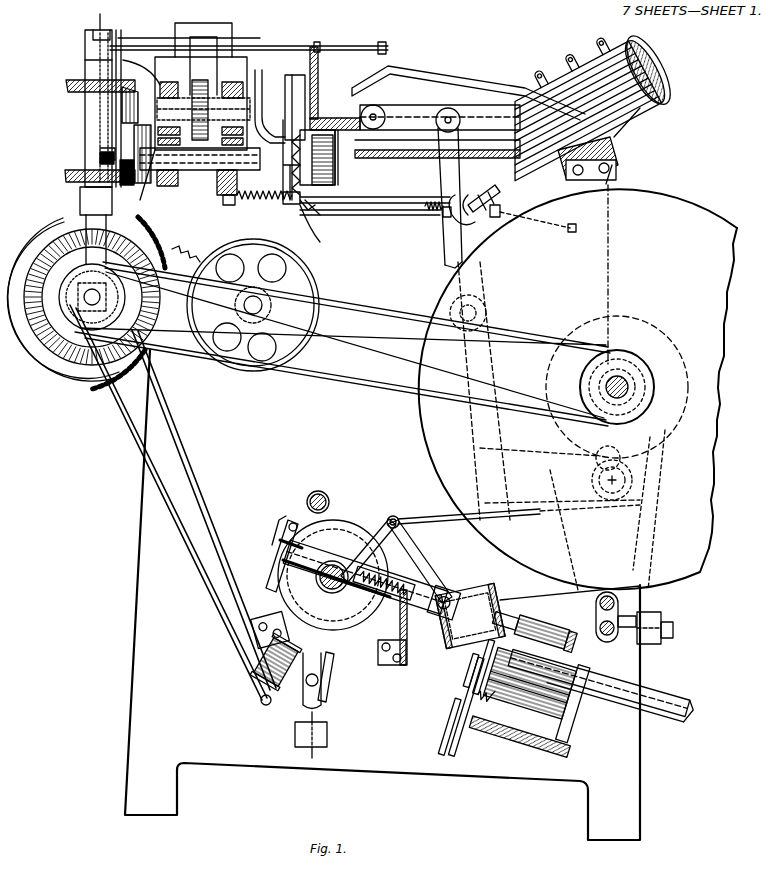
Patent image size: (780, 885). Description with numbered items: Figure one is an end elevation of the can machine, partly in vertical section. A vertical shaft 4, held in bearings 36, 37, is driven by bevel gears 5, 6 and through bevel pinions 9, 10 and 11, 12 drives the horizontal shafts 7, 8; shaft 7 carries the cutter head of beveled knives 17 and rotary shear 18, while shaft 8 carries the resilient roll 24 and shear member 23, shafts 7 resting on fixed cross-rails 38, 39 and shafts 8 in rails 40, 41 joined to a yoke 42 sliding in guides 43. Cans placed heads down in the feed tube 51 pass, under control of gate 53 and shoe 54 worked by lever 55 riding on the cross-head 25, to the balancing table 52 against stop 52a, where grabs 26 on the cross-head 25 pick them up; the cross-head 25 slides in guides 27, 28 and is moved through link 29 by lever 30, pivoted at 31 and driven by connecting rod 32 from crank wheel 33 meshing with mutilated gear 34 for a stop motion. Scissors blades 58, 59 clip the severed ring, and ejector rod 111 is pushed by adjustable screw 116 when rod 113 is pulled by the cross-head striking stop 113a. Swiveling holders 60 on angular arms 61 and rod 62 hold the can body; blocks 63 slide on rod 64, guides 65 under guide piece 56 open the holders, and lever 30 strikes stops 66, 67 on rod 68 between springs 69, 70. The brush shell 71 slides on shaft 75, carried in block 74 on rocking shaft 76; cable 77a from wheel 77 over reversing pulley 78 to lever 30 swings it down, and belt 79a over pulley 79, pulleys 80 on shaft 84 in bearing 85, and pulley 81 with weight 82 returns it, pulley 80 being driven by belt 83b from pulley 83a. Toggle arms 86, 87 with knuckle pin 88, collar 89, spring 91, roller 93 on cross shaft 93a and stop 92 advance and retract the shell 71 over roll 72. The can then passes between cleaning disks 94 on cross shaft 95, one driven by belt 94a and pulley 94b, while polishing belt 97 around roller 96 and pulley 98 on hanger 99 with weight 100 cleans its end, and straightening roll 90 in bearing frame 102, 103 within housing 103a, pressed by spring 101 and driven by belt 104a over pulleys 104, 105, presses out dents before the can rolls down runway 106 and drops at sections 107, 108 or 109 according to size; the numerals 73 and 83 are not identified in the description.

The vertical shaft 4 is at (90, 132).
The bevel gear 5 is at (35, 352).
The bevel gear 6 is at (84, 238).
The shaft 7 is at (100, 150).
The shaft 8 is at (116, 108).
The bevel pinion 9 is at (70, 175).
The bevel pinion 10 is at (136, 150).
The bevel pinion 11 is at (68, 88).
The bevel pinion 12 is at (134, 100).
The beveled knives 17 is at (336, 186).
The rotary shear member 18 is at (290, 206).
The shear member 23 is at (292, 85).
The resilient head or roll 24 is at (297, 107).
The cross-head 25 is at (318, 95).
The grabs 26 is at (342, 165).
The guide 27 is at (468, 118).
The guide 28 is at (474, 134).
The link 29 is at (395, 112).
The lever 30 is at (450, 258).
The pivot 31 is at (520, 585).
The connecting rod 32 is at (350, 302).
The crank wheel 33 is at (300, 352).
The mutilated gear 34 is at (212, 246).
The bearing 36 is at (82, 200).
The bearing 37 is at (85, 52).
The fixed cross-rail 38 is at (178, 184).
The fixed cross-rail 39 is at (216, 187).
The rail 40 is at (169, 105).
The rail 41 is at (232, 105).
The yoke 42 is at (232, 40).
The guides 43 is at (215, 22).
The feed tube 51 is at (625, 42).
The balancing table 52 is at (478, 195).
The stop 52a is at (452, 205).
The gate 53 is at (535, 80).
The shoe 54 is at (590, 56).
The lever 55 is at (435, 72).
The guide piece 56 is at (562, 68).
The scissors shear member 58 is at (201, 169).
The scissors shear blade 59 is at (258, 82).
The swiveling holders 60 is at (285, 160).
The angular arms 61 is at (320, 212).
The rod 62 is at (320, 242).
The block 63 is at (304, 216).
The rod 64 is at (378, 199).
The guides 65 is at (385, 160).
The stop 66 is at (469, 226).
The stop 67 is at (566, 234).
The rod 68 is at (365, 216).
The spring 69 is at (438, 222).
The spring 70 is at (258, 200).
The brush shell 71 is at (462, 588).
The roll 72 is at (536, 616).
The collar 73 is at (560, 636).
The block 74 is at (322, 558).
The shaft 75 is at (412, 572).
The shaft 76 is at (322, 590).
The wheel 77 is at (335, 520).
The flexible cable 77a is at (422, 516).
The reversing pulley 78 is at (612, 502).
The pulley 79 is at (275, 550).
The belt 79a is at (292, 524).
The pulleys 80 is at (300, 692).
The pulley 81 is at (336, 657).
The weight 82 is at (327, 734).
The belt 83 is at (258, 690).
The pulley 83a is at (128, 290).
The connecting belt 83b is at (210, 490).
The shaft 84 is at (245, 668).
The bearing 85 is at (278, 706).
The toggle arm 86 is at (386, 518).
The toggle arm 87 is at (414, 546).
The knuckle pin 88 is at (396, 516).
The collar 89 is at (438, 618).
The straightening roll 90 is at (470, 690).
The spring 91 is at (380, 600).
The stop 92 is at (408, 645).
The roller 93 is at (324, 492).
The cross shaft 93a is at (308, 500).
The cleaning disks 94 is at (430, 402).
The belt 94a is at (528, 326).
The pulley 94b is at (655, 385).
The cross shaft 95 is at (618, 398).
The roller 96 is at (552, 412).
The cleaning belt 97 is at (578, 540).
The pulley 98 is at (625, 636).
The swinging hanger 99 is at (620, 606).
The weight 100 is at (662, 616).
The spring 101 is at (498, 712).
The bearing frame 102 is at (482, 650).
The bearing frame 103 is at (572, 682).
The housing 103a is at (566, 716).
The pulley 104 is at (462, 668).
The belt 104a is at (458, 712).
The pulley 105 is at (456, 736).
The runway 106 is at (606, 690).
The runway section 107 is at (641, 718).
The runway section 108 is at (672, 708).
The runway section 109 is at (694, 700).
The rod 111 is at (132, 179).
The rod 113 is at (318, 44).
The stop 113a is at (383, 42).
The adjustable screw 116 is at (100, 160).